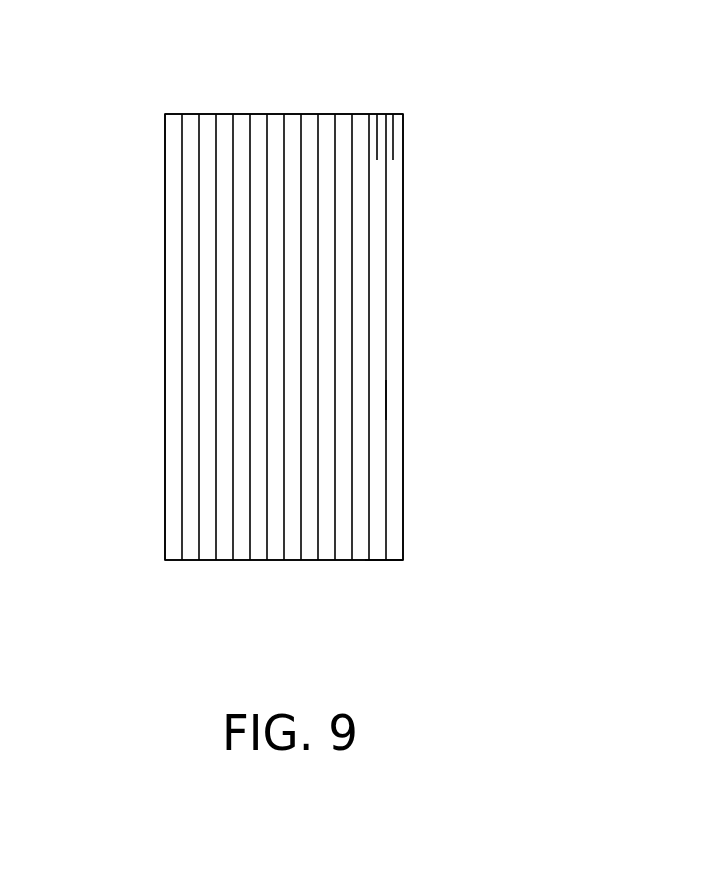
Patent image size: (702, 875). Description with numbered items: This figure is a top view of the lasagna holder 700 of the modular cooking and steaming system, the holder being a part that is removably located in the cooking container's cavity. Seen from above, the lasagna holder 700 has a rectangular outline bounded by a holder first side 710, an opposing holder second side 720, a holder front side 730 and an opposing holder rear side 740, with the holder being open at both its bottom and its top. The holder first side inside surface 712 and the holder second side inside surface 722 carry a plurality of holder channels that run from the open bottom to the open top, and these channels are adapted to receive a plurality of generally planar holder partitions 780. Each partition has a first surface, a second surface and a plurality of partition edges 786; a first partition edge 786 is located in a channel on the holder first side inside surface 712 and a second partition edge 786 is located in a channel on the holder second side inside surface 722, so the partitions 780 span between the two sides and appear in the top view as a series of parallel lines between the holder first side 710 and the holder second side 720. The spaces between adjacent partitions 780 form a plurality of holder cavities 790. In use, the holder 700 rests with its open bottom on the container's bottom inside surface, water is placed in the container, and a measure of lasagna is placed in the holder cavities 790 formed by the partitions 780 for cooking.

The lasagna holder 700 is at (152, 293).
The holder first side 710 is at (260, 560).
The holder first side inside surface 712 is at (378, 558).
The holder second side 720 is at (307, 114).
The holder second side inside surface 722 is at (195, 114).
The holder front side 730 is at (403, 265).
The holder rear side 740 is at (165, 432).
The holder partition 780 is at (386, 400).
The partition edge 786 is at (233, 114).
The holder cavity 790 is at (377, 158).